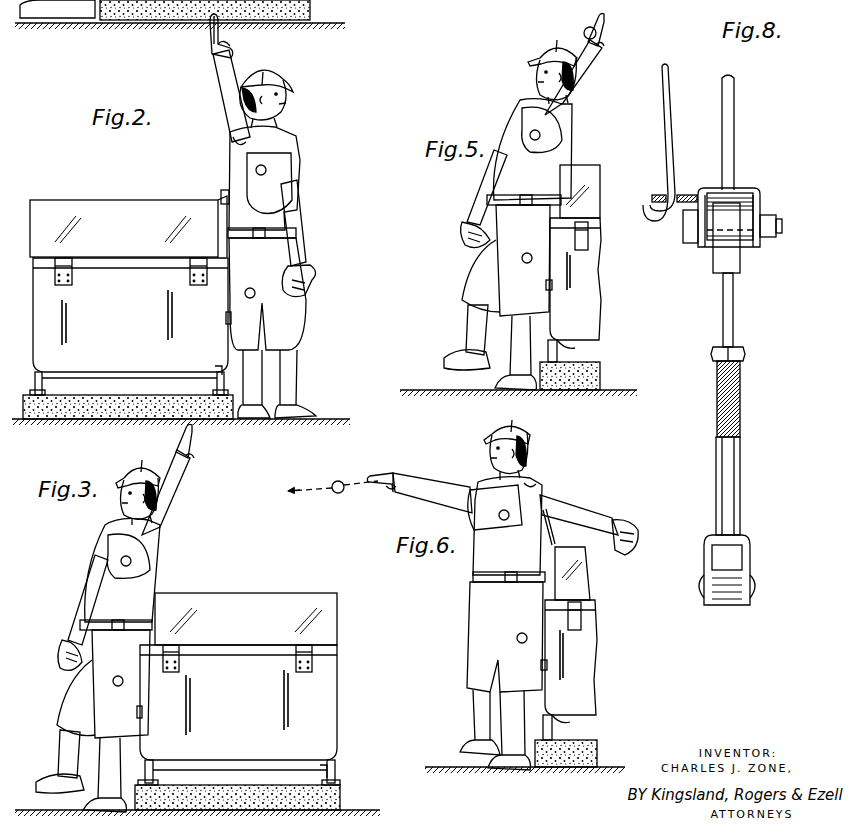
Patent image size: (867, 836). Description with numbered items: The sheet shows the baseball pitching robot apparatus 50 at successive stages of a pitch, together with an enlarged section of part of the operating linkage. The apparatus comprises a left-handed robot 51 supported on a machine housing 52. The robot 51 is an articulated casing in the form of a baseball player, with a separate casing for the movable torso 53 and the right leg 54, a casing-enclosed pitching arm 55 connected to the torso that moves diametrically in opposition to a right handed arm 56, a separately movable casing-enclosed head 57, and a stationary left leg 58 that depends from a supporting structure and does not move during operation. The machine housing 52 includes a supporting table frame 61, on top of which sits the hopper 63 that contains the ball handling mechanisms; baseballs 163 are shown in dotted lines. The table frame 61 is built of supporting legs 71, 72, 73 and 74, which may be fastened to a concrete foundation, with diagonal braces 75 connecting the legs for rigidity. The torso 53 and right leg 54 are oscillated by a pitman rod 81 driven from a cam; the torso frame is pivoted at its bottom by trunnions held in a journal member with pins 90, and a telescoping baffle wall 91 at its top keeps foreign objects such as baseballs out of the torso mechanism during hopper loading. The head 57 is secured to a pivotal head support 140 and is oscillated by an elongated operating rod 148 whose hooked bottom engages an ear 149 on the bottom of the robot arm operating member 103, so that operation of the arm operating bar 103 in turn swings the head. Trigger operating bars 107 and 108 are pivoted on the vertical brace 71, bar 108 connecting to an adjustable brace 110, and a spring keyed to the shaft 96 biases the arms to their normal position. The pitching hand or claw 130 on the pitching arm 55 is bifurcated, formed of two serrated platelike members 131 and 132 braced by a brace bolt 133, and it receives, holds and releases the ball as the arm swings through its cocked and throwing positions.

In FIG. 2, the baseball pitching robot apparatus 50 is at (115, 170).
In FIG. 5, the baseball pitching robot apparatus 50 is at (493, 128).
In FIG. 3, the baseball pitching robot apparatus 50 is at (233, 520).
In FIG. 6, the baseball pitching robot apparatus 50 is at (593, 485).
In FIG. 2, the left-handed robot 51 is at (296, 192).
In FIG. 5, the left-handed robot 51 is at (497, 183).
In FIG. 3, the left-handed robot 51 is at (161, 575).
In FIG. 6, the left-handed robot 51 is at (472, 578).
In FIG. 2, the machine housing 52 is at (88, 196).
In FIG. 5, the machine housing 52 is at (604, 271).
In FIG. 3, the machine housing 52 is at (279, 588).
In FIG. 6, the machine housing 52 is at (569, 657).
In FIG. 2, the movable torso 53 is at (233, 168).
In FIG. 5, the movable torso 53 is at (565, 143).
In FIG. 3, the movable torso 53 is at (95, 562).
In FIG. 6, the movable torso 53 is at (526, 490).
In FIG. 2, the right leg 54 is at (288, 323).
In FIG. 5, the right leg 54 is at (480, 298).
In FIG. 3, the right leg 54 is at (76, 720).
In FIG. 6, the right leg 54 is at (471, 670).
In FIG. 2, the pitching arm 55 is at (225, 92).
In FIG. 5, the pitching arm 55 is at (575, 80).
In FIG. 3, the pitching arm 55 is at (172, 498).
In FIG. 6, the pitching arm 55 is at (448, 490).
In FIG. 2, the right handed arm 56 is at (283, 230).
In FIG. 5, the right handed arm 56 is at (482, 225).
In FIG. 3, the right handed arm 56 is at (80, 640).
In FIG. 6, the right handed arm 56 is at (588, 527).
In FIG. 2, the head 57 is at (268, 83).
In FIG. 5, the head 57 is at (536, 50).
In FIG. 3, the head 57 is at (140, 475).
In FIG. 6, the head 57 is at (529, 440).
In FIG. 2, the stationary left leg 58 is at (240, 332).
In FIG. 5, the stationary left leg 58 is at (530, 306).
In FIG. 3, the stationary left leg 58 is at (122, 714).
In FIG. 6, the stationary left leg 58 is at (548, 641).
In FIG. 2, the supporting table frame 61 is at (216, 386).
In FIG. 5, the supporting table frame 61 is at (564, 352).
In FIG. 3, the supporting table frame 61 is at (339, 769).
In FIG. 6, the supporting table frame 61 is at (561, 728).
In FIG. 2, the hopper 63 is at (133, 205).
In FIG. 5, the hopper 63 is at (592, 186).
In FIG. 3, the hopper 63 is at (306, 610).
In FIG. 6, the hopper 63 is at (589, 583).
In FIG. 5, the supporting leg 71 is at (561, 340).
In FIG. 3, the supporting leg 71 is at (152, 772).
In FIG. 6, the supporting leg 71 is at (559, 714).
In FIG. 3, the supporting leg 72 is at (326, 775).
In FIG. 2, the supporting leg 73 is at (222, 374).
In FIG. 2, the supporting leg 74 is at (44, 384).
In FIG. 2, the diagonal brace 75 is at (57, 372).
In FIG. 5, the diagonal brace 75 is at (570, 340).
In FIG. 3, the diagonal brace 75 is at (160, 768).
In FIG. 6, the diagonal brace 75 is at (561, 718).
In FIG. 2, the pitman rod 81 is at (230, 318).
In FIG. 5, the pitman rod 81 is at (547, 285).
In FIG. 3, the pitman rod 81 is at (141, 712).
In FIG. 6, the pitman rod 81 is at (541, 665).
In FIG. 2, the pin 90 is at (245, 295).
In FIG. 5, the pin 90 is at (522, 259).
In FIG. 3, the pin 90 is at (113, 682).
In FIG. 6, the pin 90 is at (516, 638).
In FIG. 2, the telescoping baffle wall 91 is at (225, 193).
In FIG. 6, the telescoping baffle wall 91 is at (549, 525).
In FIG. 2, the shaft 96 is at (266, 169).
In FIG. 5, the shaft 96 is at (531, 132).
In FIG. 3, the shaft 96 is at (121, 565).
In FIG. 6, the shaft 96 is at (510, 514).
In FIG. 8, the robot arm operating member 103 is at (736, 114).
In FIG. 8, the trigger operating bar 107 is at (725, 208).
In FIG. 8, the trigger operating bar 108 is at (728, 600).
In FIG. 8, the adjustable brace 110 is at (736, 456).
In FIG. 2, the pitching hand or claw 130 is at (206, 54).
In FIG. 5, the pitching hand or claw 130 is at (612, 46).
In FIG. 3, the pitching hand or claw 130 is at (196, 452).
In FIG. 6, the pitching hand or claw 130 is at (598, 432).
In FIG. 2, the serrated platelike member 131 is at (218, 48).
In FIG. 5, the serrated platelike member 132 is at (605, 21).
In FIG. 3, the serrated platelike member 132 is at (188, 446).
In FIG. 6, the serrated platelike member 132 is at (391, 470).
In FIG. 2, the brace bolt 133 is at (220, 60).
In FIG. 5, the brace bolt 133 is at (606, 40).
In FIG. 3, the brace bolt 133 is at (191, 460).
In FIG. 6, the brace bolt 133 is at (390, 485).
In FIG. 2, the pivotal head support 140 is at (236, 145).
In FIG. 6, the pivotal head support 140 is at (531, 480).
In FIG. 8, the elongated operating rod 148 is at (672, 100).
In FIG. 8, the ear 149 is at (684, 194).
In FIG. 5, the baseballs 163 is at (584, 31).
In FIG. 6, the baseballs 163 is at (338, 480).